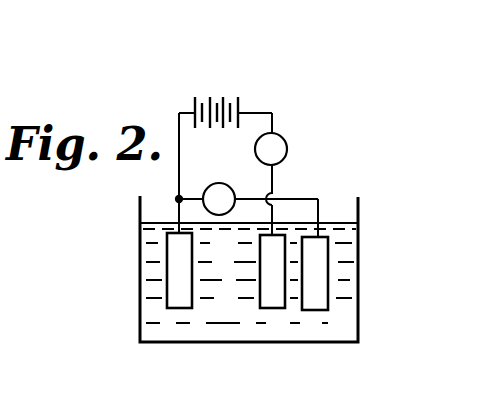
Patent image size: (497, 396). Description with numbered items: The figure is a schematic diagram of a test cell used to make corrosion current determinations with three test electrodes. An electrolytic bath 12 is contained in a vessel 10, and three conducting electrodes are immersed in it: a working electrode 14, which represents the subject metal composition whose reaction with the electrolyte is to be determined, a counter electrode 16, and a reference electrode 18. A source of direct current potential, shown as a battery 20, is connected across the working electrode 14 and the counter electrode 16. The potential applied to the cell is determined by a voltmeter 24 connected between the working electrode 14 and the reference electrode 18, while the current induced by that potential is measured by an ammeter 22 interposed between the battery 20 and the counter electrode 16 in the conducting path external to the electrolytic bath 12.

The vessel 10 is at (197, 343).
The electrolytic bath 12 is at (249, 278).
The working electrode 14 is at (168, 282).
The counter electrode 16 is at (273, 303).
The reference electrode 18 is at (329, 250).
The battery 20 is at (227, 97).
The ammeter 22 is at (288, 148).
The voltmeter 24 is at (232, 167).